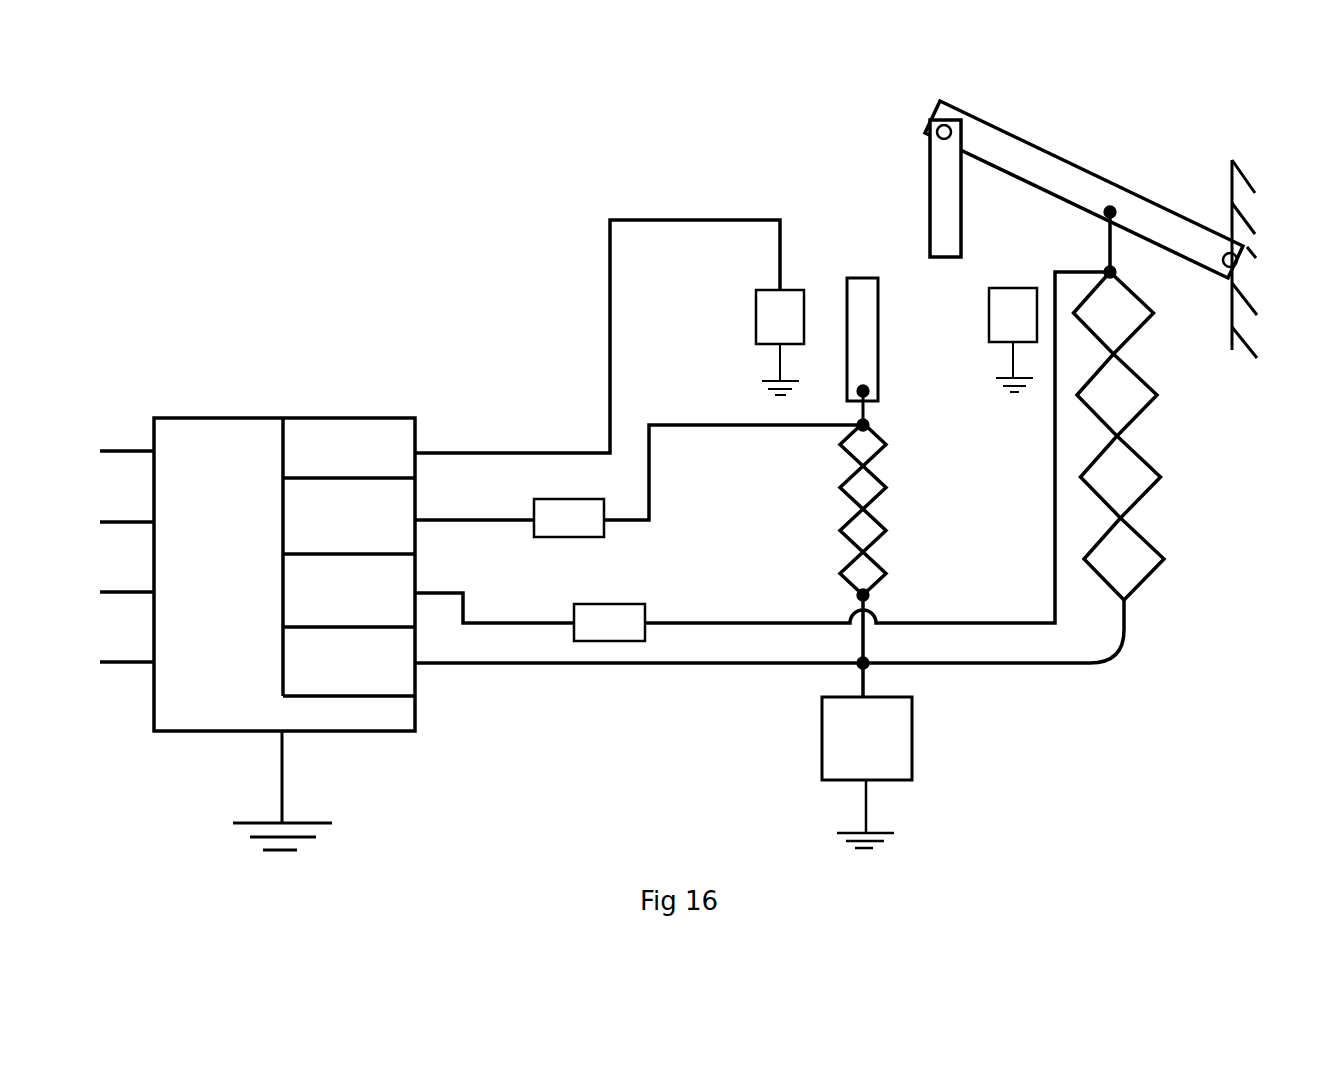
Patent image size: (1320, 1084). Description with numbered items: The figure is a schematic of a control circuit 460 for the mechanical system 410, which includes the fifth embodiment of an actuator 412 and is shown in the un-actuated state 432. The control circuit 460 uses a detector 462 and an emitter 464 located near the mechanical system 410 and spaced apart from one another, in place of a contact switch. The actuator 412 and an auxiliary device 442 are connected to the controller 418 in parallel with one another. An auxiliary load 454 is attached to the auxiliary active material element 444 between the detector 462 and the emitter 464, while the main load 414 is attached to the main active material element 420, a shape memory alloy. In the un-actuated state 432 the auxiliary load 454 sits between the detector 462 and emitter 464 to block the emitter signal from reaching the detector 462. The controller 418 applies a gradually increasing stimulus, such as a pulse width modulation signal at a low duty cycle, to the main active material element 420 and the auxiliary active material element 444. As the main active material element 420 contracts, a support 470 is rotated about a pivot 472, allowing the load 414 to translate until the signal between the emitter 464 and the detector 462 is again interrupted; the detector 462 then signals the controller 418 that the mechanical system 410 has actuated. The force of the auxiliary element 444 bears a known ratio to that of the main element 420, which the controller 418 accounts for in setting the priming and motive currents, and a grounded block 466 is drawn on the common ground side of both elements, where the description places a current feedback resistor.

The mechanical system 410 is at (856, 140).
The actuator 412 is at (1216, 511).
The load 414 is at (961, 218).
The controller 418 is at (214, 402).
The active material element 420 is at (1140, 453).
The un-actuated state 432 is at (814, 203).
The auxiliary device 442 is at (776, 558).
The auxiliary active material element 444 is at (847, 540).
The auxiliary load 454 is at (847, 288).
The control circuit 460 is at (415, 328).
The detector 462 is at (780, 342).
The emitter 464 is at (1013, 340).
The ground connection element 466 is at (867, 772).
The support 470 is at (1073, 205).
The pivot 472 is at (1243, 252).